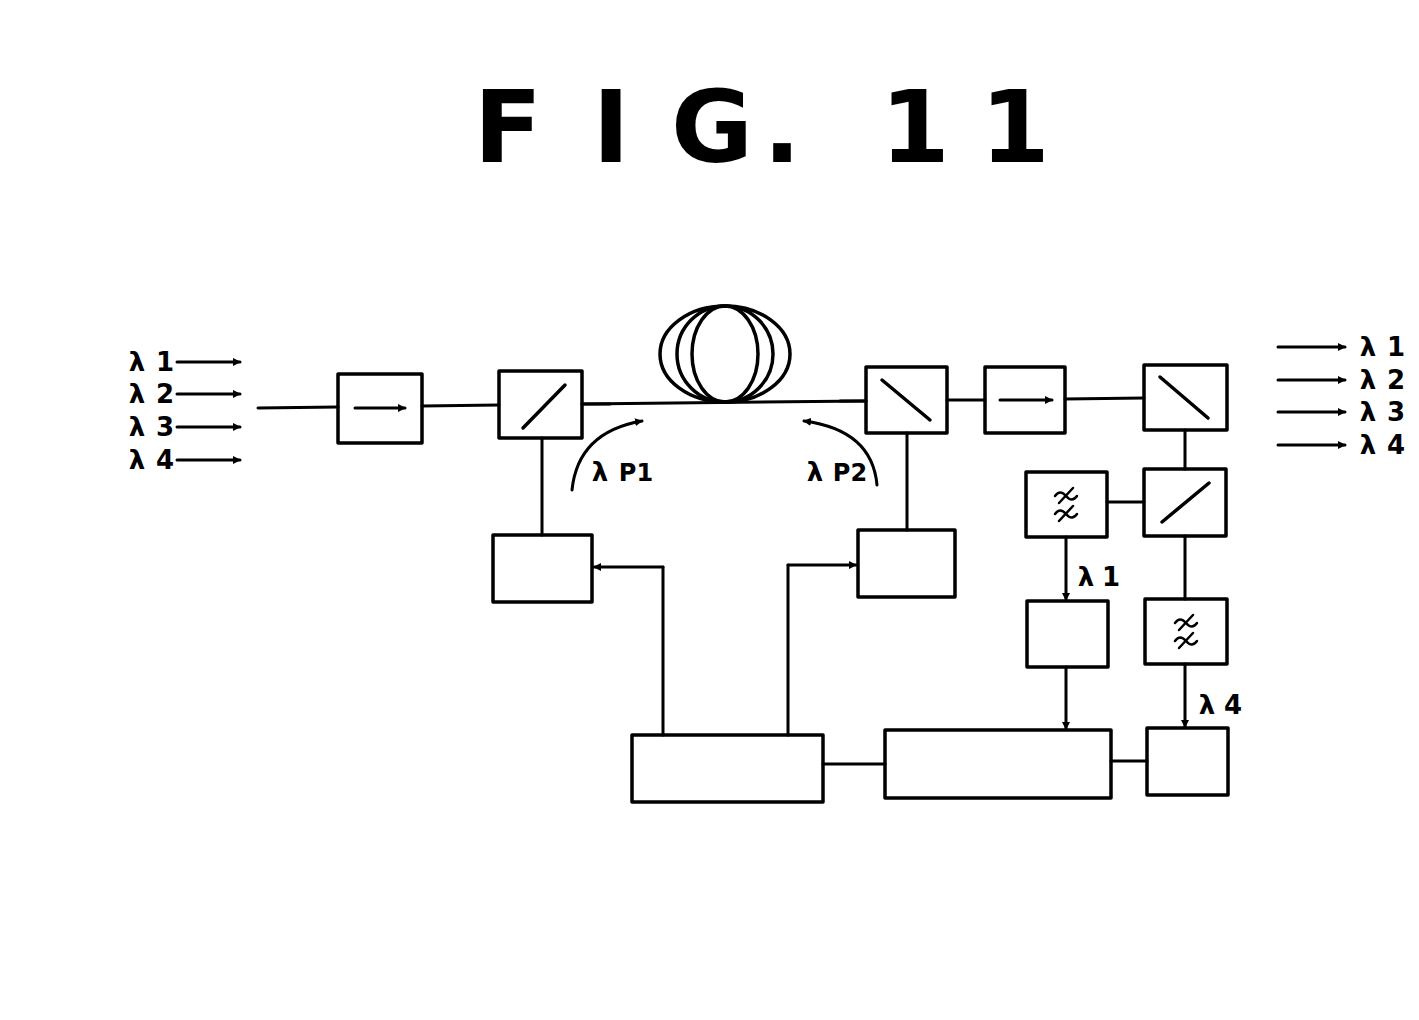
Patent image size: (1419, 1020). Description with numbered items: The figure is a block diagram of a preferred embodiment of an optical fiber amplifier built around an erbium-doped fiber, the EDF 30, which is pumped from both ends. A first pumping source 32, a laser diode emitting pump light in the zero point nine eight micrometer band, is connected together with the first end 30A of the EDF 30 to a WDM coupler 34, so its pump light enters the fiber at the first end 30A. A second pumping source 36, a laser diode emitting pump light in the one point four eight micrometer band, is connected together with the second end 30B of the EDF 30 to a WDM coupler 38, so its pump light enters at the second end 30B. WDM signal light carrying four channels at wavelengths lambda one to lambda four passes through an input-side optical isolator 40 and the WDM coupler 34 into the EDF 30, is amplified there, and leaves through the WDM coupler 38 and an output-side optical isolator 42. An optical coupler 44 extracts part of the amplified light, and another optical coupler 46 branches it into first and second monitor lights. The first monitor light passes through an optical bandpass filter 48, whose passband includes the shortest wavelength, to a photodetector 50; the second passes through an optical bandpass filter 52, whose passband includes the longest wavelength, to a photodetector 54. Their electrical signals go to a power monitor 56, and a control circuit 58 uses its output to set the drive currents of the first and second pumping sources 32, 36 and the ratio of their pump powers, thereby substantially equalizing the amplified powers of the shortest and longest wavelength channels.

The EDF 30 is at (725, 306).
The first end 30A is at (594, 401).
The second end 30B is at (855, 401).
The first pumping source 32 is at (542, 604).
The WDM coupler 34 is at (530, 371).
The second pumping source 36 is at (887, 600).
The WDM coupler 38 is at (937, 367).
The optical isolator 40 is at (378, 374).
The optical isolator 42 is at (1023, 367).
The optical coupler 44 is at (1190, 365).
The optical coupler 46 is at (1228, 503).
The optical bandpass filter 48 is at (1026, 502).
The photodetector 50 is at (1027, 630).
The optical bandpass filter 52 is at (1229, 631).
The photodetector 54 is at (1230, 761).
The power monitor 56 is at (1010, 801).
The control circuit 58 is at (727, 805).